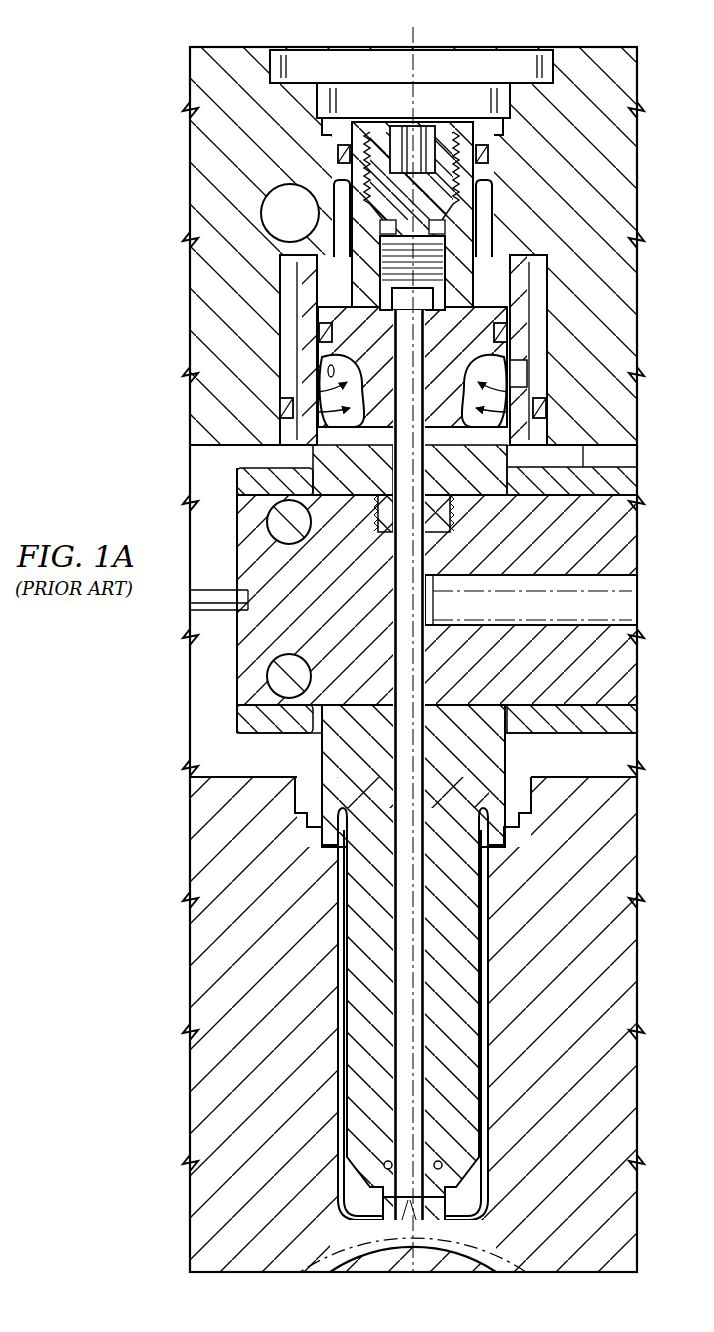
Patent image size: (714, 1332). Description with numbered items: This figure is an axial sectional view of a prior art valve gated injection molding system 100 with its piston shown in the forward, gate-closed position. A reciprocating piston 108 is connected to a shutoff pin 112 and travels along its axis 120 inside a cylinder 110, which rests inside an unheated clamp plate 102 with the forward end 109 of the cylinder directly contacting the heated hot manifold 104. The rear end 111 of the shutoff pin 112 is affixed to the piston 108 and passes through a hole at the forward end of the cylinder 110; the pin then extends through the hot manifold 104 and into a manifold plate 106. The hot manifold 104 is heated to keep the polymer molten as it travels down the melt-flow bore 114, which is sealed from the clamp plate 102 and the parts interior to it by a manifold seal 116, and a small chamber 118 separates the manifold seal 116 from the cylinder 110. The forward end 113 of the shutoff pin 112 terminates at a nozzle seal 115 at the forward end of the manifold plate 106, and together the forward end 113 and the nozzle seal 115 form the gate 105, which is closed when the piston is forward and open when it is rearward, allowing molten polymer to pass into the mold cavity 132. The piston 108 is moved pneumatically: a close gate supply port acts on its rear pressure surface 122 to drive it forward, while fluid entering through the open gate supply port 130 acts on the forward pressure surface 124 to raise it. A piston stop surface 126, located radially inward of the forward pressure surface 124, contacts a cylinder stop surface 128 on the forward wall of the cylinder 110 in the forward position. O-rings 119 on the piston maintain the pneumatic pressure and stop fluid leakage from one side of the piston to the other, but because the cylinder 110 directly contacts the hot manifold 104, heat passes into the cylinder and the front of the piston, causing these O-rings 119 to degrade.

The valve gated injection molding system 100 is at (141, 192).
The clamp plate 102 is at (213, 47).
The hot manifold 104 is at (612, 550).
The gate 105 is at (456, 1228).
The manifold plate 106 is at (197, 1110).
The piston 108 is at (478, 212).
The forward end of the cylinder 109 is at (240, 492).
The cylinder 110 is at (520, 332).
The rear end of the shutoff pin 111 is at (455, 302).
The shutoff pin 112 is at (400, 1078).
The forward end of the shutoff pin 113 is at (427, 1134).
The melt-flow bore 114 is at (400, 1048).
The nozzle seal 115 is at (370, 1202).
The manifold seal 116 is at (442, 516).
The small chamber 118 is at (353, 478).
The O-rings 119 is at (320, 332).
The axis 120 is at (415, 33).
The rear pressure surface 122 is at (335, 284).
The forward pressure surface 124 is at (285, 408).
The piston stop surface 126 is at (458, 420).
The cylinder stop surface 128 is at (374, 431).
The open gate supply port 130 is at (520, 372).
The mold cavity 132 is at (497, 1259).